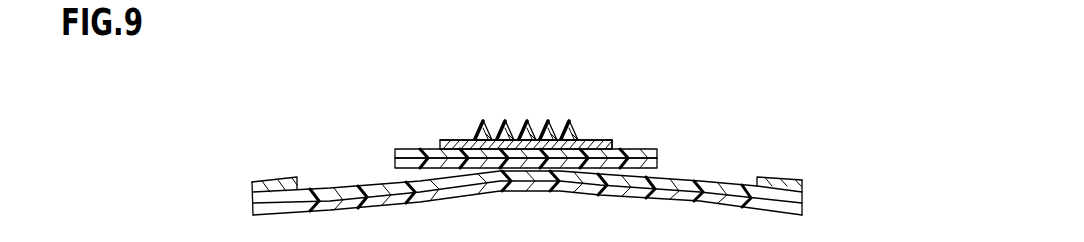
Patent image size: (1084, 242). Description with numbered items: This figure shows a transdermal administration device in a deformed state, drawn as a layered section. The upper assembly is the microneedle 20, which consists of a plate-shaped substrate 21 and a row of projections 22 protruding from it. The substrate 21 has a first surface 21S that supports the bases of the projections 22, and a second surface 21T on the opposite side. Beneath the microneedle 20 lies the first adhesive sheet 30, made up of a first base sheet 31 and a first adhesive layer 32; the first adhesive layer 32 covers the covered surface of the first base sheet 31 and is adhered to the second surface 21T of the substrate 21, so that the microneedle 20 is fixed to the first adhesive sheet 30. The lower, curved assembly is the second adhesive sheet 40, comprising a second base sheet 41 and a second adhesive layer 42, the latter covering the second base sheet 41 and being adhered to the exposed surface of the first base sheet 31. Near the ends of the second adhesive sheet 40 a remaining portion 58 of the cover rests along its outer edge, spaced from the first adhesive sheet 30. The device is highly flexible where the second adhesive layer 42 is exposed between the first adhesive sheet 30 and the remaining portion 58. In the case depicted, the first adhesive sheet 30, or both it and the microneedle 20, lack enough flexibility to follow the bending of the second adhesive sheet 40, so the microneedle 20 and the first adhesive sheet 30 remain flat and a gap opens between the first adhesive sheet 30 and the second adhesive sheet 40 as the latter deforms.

The microneedle 20 is at (432, 68).
The substrate 21 is at (440, 143).
The first surface 21S is at (596, 141).
The second surface 21T is at (613, 152).
The projection 22 is at (484, 130).
The first adhesive sheet 30 is at (415, 103).
The first base sheet 31 is at (395, 163).
The first adhesive layer 32 is at (395, 152).
The second adhesive sheet 40 is at (855, 178).
The second base sheet 41 is at (803, 207).
The second adhesive layer 42 is at (804, 193).
The remaining portion 58 is at (777, 178).